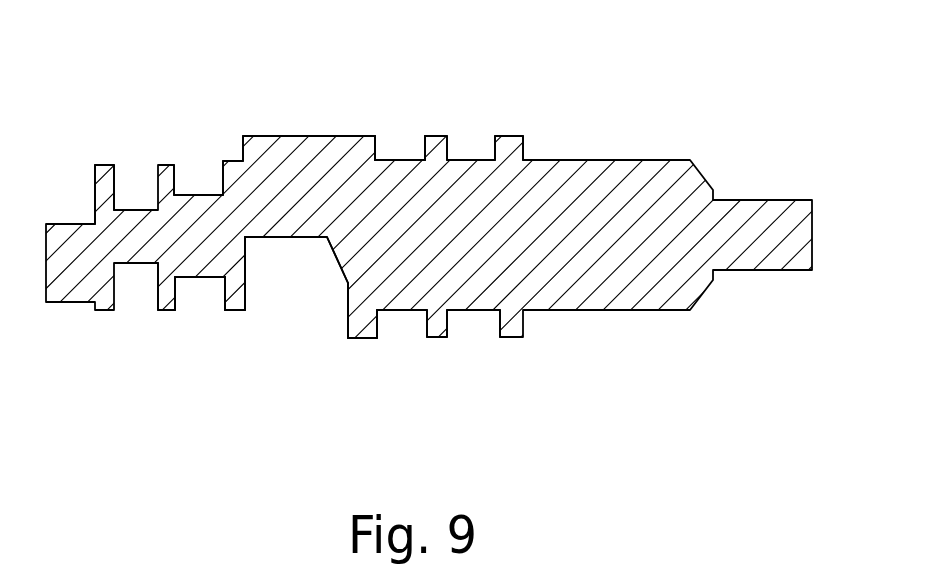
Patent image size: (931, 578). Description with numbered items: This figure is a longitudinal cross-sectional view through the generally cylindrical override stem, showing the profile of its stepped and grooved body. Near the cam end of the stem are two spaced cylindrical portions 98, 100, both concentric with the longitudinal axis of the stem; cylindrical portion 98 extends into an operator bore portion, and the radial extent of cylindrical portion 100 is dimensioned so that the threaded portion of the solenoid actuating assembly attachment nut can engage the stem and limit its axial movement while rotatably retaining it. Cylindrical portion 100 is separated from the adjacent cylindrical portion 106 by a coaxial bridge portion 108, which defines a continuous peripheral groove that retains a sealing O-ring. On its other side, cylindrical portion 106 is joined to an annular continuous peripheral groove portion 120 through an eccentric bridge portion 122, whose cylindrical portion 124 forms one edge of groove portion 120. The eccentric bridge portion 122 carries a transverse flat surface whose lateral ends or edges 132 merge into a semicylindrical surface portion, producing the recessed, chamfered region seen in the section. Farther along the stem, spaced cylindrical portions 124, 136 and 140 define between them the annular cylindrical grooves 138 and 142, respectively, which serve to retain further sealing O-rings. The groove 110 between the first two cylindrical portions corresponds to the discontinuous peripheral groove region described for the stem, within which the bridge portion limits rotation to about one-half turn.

The cylindrical portion 98 is at (110, 164).
The cylindrical portion 100 is at (169, 311).
The cylindrical portion 106 is at (233, 310).
The coaxial bridge portion 108 is at (205, 278).
The groove 110 is at (203, 193).
The annular continuous peripheral groove portion 120 is at (400, 160).
The eccentric bridge portion 122 is at (310, 136).
The cylindrical portion 124 is at (362, 339).
The lateral ends or edges 132 is at (272, 238).
The cylindrical portion 136 is at (436, 136).
The annular cylindrical groove 138 is at (398, 313).
The cylindrical portion 140 is at (512, 136).
The annular cylindrical groove 142 is at (474, 313).